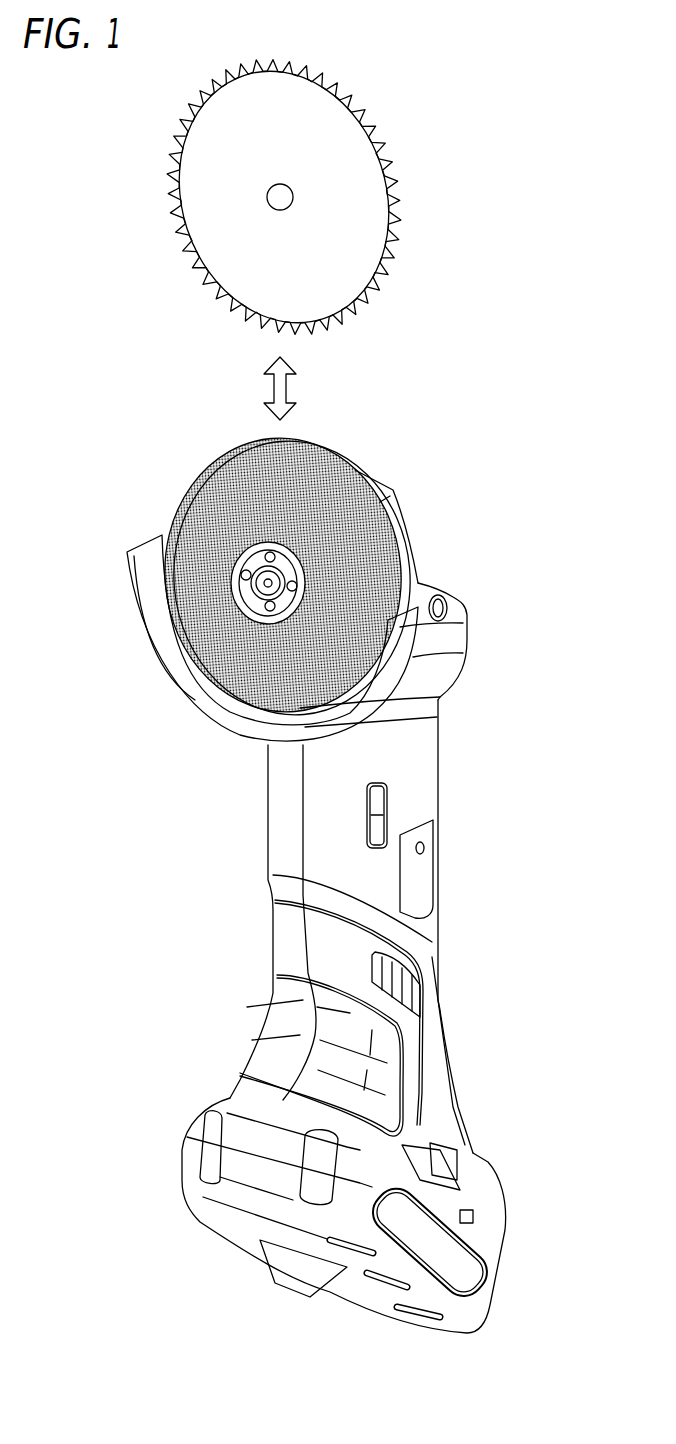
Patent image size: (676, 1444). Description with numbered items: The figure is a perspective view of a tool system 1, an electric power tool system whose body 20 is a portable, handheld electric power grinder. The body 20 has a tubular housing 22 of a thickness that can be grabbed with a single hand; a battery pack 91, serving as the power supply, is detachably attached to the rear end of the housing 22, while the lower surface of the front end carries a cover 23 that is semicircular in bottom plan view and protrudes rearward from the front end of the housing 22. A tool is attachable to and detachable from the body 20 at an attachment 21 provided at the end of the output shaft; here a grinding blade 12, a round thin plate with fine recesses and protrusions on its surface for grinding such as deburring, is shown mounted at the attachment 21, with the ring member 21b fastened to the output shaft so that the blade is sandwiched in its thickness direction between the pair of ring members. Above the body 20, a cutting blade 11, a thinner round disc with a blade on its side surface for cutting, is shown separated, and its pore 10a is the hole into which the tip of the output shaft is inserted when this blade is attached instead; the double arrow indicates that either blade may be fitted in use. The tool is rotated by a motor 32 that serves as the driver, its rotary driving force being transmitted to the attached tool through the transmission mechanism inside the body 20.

The tool system 1 is at (458, 660).
The pore 10a is at (277, 202).
The cutting blade 11 is at (397, 222).
The grinding blade 12 is at (197, 478).
The body 20 is at (420, 786).
The attachment 21 is at (247, 598).
The ring member 21b is at (247, 557).
The housing 22 is at (428, 942).
The cover 23 is at (210, 697).
The motor 32 is at (262, 585).
The battery pack 91 is at (490, 1275).